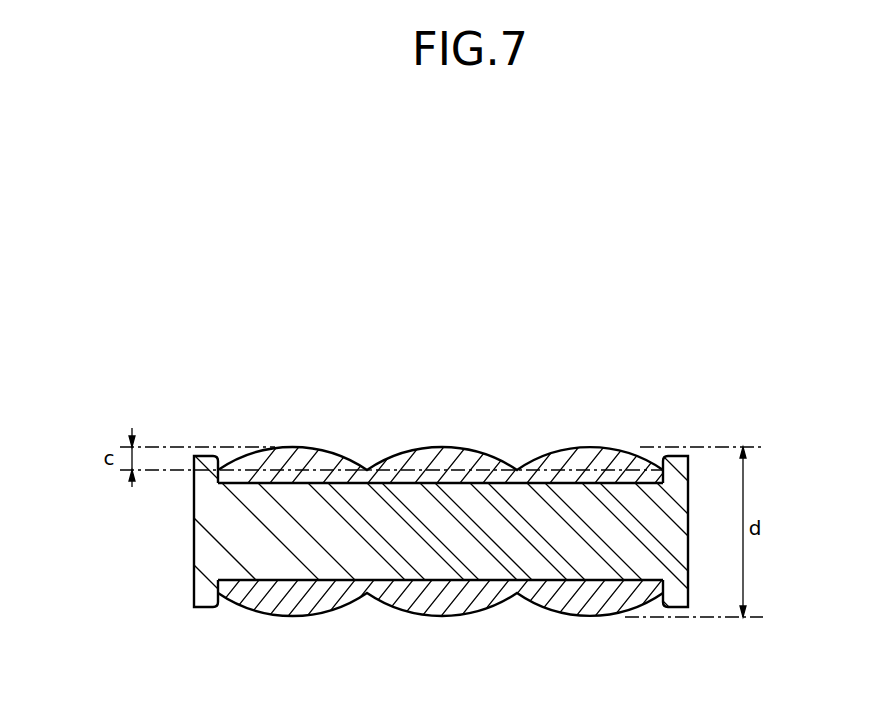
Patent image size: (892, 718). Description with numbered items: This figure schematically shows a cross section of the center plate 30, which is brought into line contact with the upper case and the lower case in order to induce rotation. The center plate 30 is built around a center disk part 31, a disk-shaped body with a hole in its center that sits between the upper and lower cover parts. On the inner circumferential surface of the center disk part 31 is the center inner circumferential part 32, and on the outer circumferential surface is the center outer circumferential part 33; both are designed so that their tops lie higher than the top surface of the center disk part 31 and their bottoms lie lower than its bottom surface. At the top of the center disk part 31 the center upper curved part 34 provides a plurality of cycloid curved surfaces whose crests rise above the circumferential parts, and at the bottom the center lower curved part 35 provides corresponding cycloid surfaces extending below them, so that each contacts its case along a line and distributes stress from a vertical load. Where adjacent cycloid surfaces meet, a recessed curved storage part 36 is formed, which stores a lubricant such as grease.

The center plate 30 is at (737, 253).
The center disk part 31 is at (437, 578).
The center inner circumferential part 32 is at (205, 603).
The center outer circumferential part 33 is at (678, 603).
The center upper curved part 34 is at (440, 463).
The center lower curved part 35 is at (418, 615).
The curved storage part 36 is at (365, 468).